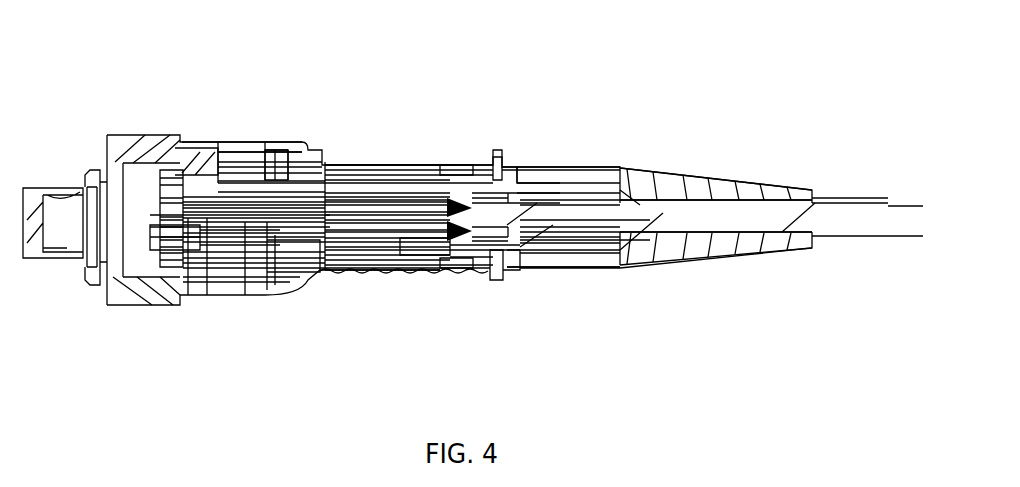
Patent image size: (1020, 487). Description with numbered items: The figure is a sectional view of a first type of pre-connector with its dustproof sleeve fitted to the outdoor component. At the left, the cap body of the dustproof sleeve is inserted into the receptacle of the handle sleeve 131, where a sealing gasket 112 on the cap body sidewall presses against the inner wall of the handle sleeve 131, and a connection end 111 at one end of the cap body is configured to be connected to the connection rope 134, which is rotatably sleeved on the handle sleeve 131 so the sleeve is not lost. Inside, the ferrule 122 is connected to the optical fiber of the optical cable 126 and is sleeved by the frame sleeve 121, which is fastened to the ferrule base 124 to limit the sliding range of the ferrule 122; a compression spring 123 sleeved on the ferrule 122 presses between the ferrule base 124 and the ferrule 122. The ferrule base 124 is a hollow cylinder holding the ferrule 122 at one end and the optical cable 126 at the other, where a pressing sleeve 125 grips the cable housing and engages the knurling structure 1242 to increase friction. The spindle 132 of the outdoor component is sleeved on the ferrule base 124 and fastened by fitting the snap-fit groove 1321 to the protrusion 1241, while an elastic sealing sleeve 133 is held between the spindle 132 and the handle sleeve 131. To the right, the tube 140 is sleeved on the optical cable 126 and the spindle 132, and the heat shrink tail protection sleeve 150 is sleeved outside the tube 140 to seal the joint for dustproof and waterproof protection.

The connection end 111 is at (80, 190).
The sealing gasket 112 is at (200, 153).
The frame sleeve 121 is at (170, 238).
The ferrule 122 is at (191, 224).
The compression spring 123 is at (241, 234).
The ferrule base 124 is at (345, 238).
The protrusion 1241 is at (282, 254).
The knurling structure 1242 is at (412, 245).
The pressing sleeve 125 is at (473, 236).
The optical cable 126 is at (548, 228).
The handle sleeve 131 is at (265, 147).
The spindle 132 is at (357, 182).
The snap-fit groove 1321 is at (289, 180).
The elastic sealing sleeve 133 is at (452, 170).
The connection rope 134 is at (497, 162).
The tube 140 is at (572, 182).
The heat shrink tail protection sleeve 150 is at (678, 180).